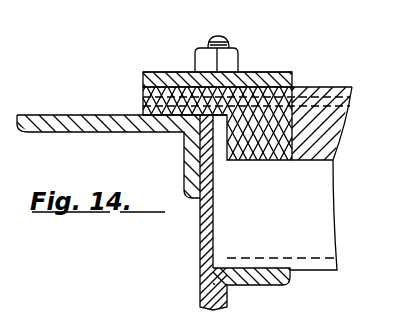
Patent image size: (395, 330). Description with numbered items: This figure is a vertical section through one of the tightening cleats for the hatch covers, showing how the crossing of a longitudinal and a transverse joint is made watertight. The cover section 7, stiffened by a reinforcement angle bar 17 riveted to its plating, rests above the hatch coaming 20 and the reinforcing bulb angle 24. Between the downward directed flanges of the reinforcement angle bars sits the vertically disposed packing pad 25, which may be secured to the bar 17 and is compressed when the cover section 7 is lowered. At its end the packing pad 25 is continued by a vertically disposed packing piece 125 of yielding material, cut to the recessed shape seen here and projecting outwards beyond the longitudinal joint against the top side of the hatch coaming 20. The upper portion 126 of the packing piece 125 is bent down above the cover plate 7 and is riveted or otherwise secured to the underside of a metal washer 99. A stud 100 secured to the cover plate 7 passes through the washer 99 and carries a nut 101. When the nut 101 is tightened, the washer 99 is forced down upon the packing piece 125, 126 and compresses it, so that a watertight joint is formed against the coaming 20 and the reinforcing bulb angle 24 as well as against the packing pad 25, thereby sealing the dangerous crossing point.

The cover section 7 is at (334, 87).
The reinforcement angle bar 17 is at (318, 215).
The hatch coaming 20 is at (208, 244).
The reinforcing bulb angle 24 is at (65, 122).
The packing pad 25 is at (318, 132).
The metal washer 99 is at (288, 72).
The stud 100 is at (229, 42).
The nut 101 is at (231, 63).
The packing piece 125 is at (258, 118).
The upper portion of the packing piece 126 is at (142, 82).